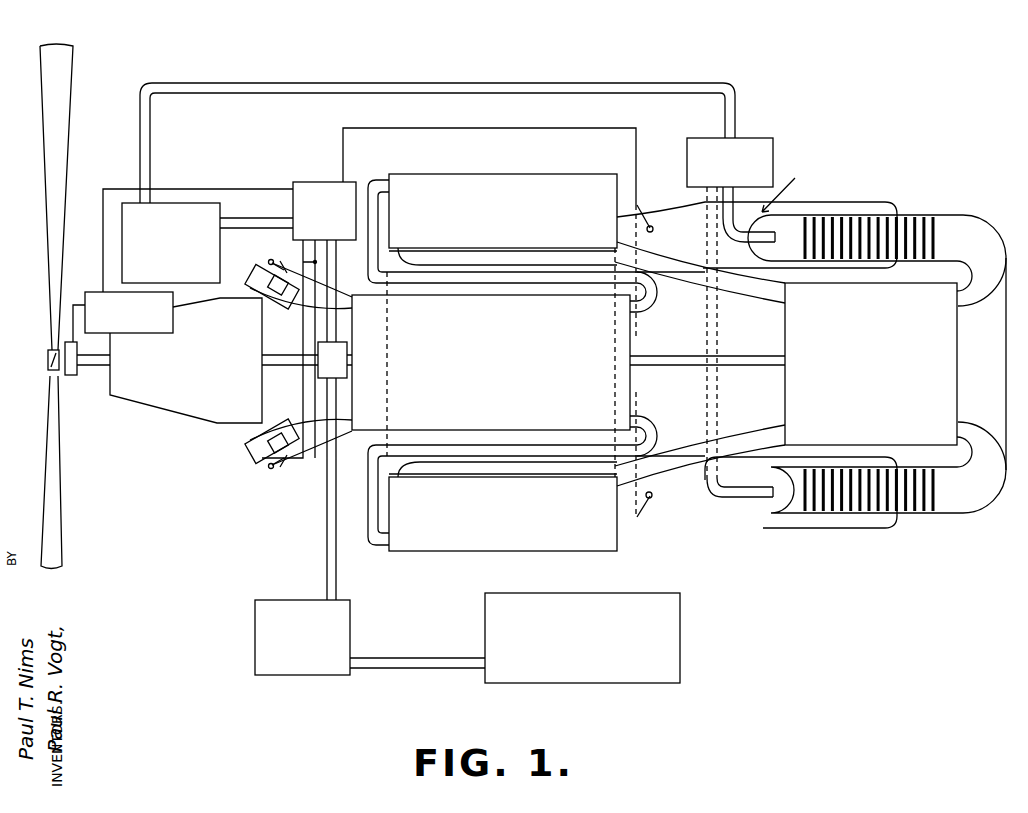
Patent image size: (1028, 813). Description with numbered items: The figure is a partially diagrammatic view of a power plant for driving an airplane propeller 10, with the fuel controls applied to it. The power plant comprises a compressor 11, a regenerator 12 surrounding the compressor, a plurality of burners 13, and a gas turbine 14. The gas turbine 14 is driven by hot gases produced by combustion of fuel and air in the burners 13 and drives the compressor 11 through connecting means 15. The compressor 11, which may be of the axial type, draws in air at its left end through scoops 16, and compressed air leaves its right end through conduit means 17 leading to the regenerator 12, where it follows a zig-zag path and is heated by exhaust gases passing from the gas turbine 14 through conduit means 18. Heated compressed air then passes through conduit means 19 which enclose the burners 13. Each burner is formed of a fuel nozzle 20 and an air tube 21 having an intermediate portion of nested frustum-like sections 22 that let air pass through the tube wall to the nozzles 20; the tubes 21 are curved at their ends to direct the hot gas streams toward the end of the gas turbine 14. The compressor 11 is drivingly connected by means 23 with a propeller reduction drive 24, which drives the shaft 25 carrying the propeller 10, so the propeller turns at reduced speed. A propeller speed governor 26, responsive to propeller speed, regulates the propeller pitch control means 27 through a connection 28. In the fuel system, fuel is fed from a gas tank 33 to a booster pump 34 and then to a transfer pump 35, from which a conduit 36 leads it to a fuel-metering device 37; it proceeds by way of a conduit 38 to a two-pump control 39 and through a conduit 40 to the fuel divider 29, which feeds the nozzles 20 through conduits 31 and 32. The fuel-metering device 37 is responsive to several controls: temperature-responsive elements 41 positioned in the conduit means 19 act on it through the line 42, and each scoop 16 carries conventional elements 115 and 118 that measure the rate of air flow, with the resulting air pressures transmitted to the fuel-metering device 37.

The airplane propeller 10 is at (50, 289).
The compressor 11 is at (372, 437).
The regenerator 12 is at (492, 174).
The burners 13 is at (777, 196).
The gas turbine 14 is at (947, 382).
The connecting means 15 is at (662, 367).
The scoops 16 is at (255, 273).
The conduit means 17 is at (652, 298).
The conduit means 18 is at (700, 285).
The conduit means 19 is at (823, 202).
The fuel nozzle 20 is at (765, 233).
The air tube 21 is at (857, 215).
The nested frustum-like sections 22 is at (877, 215).
The means 23 is at (282, 366).
The propeller reduction drive 24 is at (188, 415).
The shaft 25 is at (93, 366).
The propeller speed governor 26 is at (97, 292).
The propeller pitch control means 27 is at (70, 375).
The connection 28 is at (72, 323).
The fuel divider 29 is at (752, 138).
The conduit 31 is at (784, 186).
The conduit 32 is at (718, 327).
The gas tank 33 is at (562, 683).
The booster pump 34 is at (337, 675).
The transfer pump 35 is at (350, 342).
The conduit 36 is at (337, 282).
The fuel-metering device 37 is at (306, 182).
The conduit 38 is at (240, 220).
The two-pump control 39 is at (188, 203).
The conduit 40 is at (203, 93).
The temperature-responsive elements 41 is at (655, 232).
The line 42 is at (555, 128).
The air flow measuring element 115 is at (267, 263).
The air flow measuring element 118 is at (272, 263).